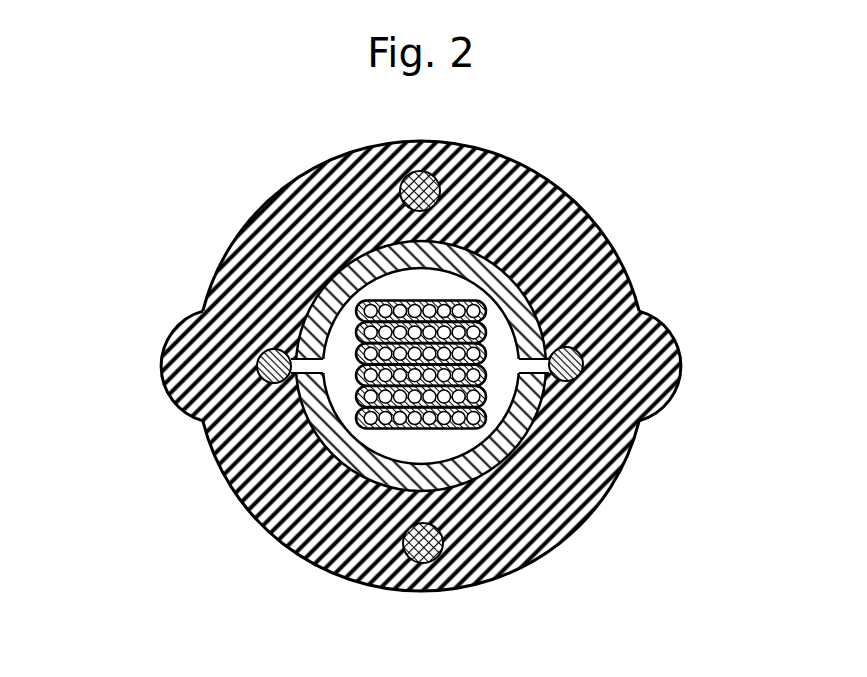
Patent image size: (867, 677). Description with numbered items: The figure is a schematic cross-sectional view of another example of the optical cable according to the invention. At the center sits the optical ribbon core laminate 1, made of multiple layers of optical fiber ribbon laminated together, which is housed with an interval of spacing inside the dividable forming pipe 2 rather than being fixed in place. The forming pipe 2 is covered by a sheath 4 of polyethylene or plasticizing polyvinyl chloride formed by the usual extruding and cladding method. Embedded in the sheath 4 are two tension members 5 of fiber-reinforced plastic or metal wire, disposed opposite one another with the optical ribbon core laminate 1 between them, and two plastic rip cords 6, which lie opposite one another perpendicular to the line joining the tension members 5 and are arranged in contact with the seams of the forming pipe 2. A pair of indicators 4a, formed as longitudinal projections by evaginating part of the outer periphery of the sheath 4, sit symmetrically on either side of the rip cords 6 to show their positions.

The optical ribbon core laminate 1 is at (500, 379).
The forming pipe 2 is at (330, 270).
The sheath 4 is at (560, 200).
The indicator 4a is at (155, 348).
The tension member 5 is at (407, 163).
The rip cord 6 is at (256, 373).